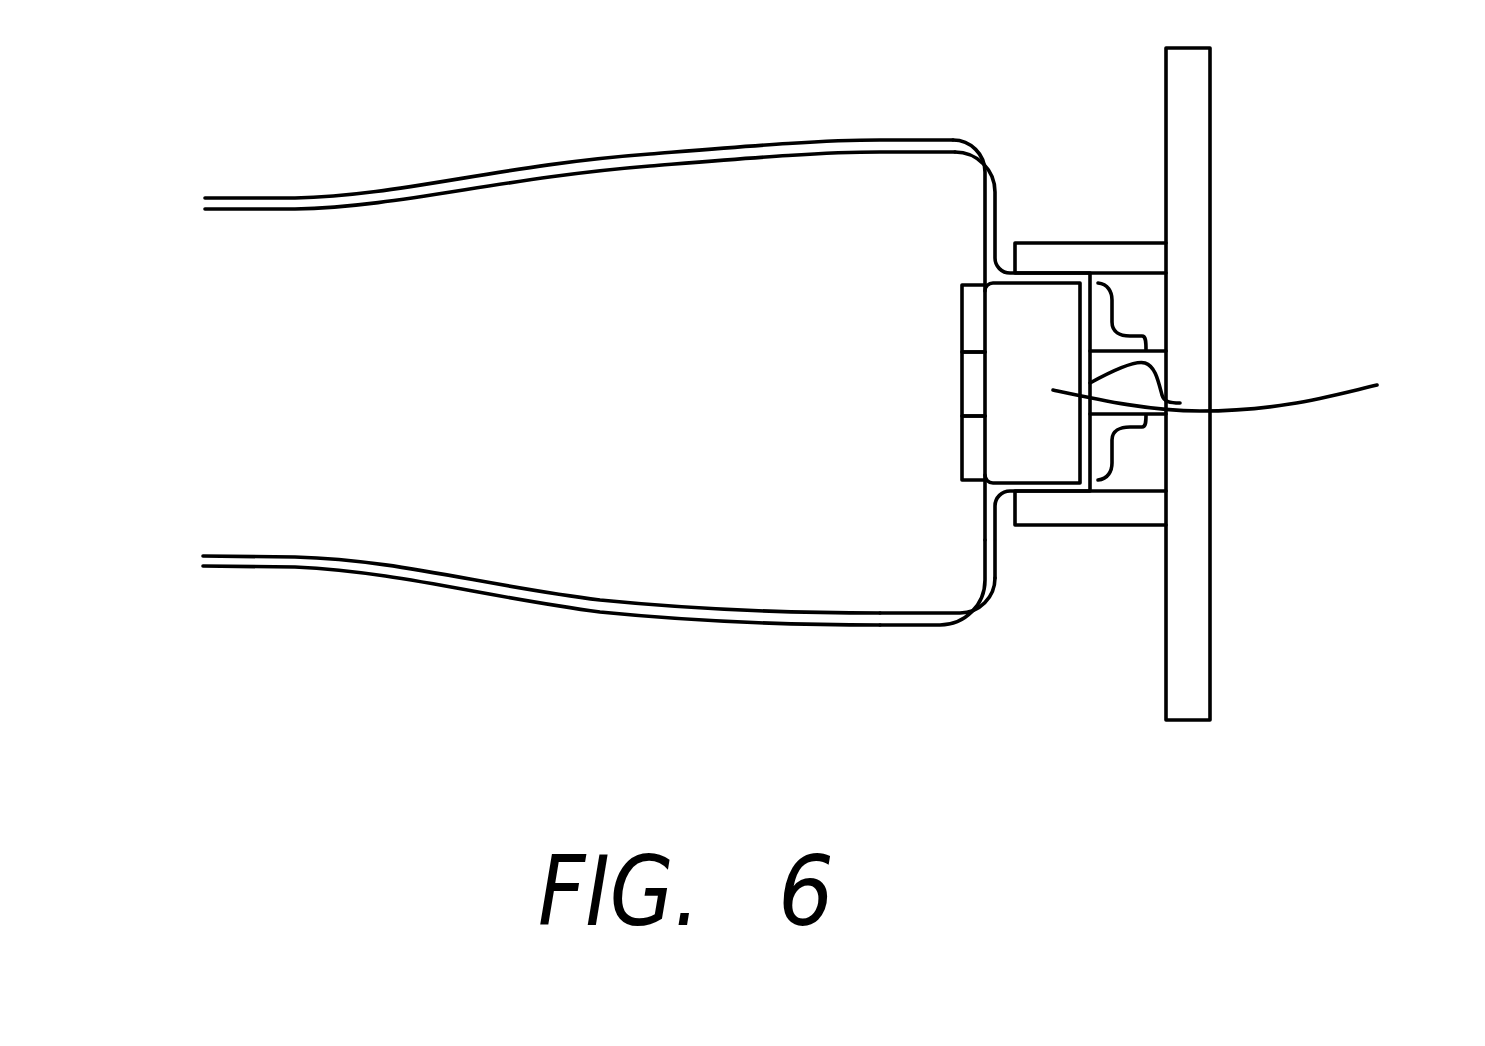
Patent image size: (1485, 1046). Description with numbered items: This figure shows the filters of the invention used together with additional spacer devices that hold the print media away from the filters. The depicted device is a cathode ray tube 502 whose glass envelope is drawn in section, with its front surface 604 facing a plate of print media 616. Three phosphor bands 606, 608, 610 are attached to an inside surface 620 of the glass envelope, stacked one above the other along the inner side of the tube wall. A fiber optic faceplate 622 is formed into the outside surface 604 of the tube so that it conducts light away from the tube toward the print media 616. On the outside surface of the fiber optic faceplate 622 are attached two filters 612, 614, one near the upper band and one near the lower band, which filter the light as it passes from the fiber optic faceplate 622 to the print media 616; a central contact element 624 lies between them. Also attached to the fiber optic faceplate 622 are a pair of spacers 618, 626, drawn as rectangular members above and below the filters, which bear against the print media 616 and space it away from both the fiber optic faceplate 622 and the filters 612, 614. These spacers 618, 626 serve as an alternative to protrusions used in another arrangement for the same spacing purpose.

The cathode ray tube neck 502 is at (714, 154).
The front surface 604 is at (997, 235).
The phosphor band 606 is at (968, 302).
The phosphor band 608 is at (972, 386).
The phosphor band 610 is at (970, 467).
The filter 612 is at (1103, 321).
The filter 614 is at (1103, 460).
The print media 616 is at (1185, 688).
The spacer 618 is at (1065, 244).
The inside surface 620 is at (985, 578).
The fiber optic faceplate 622 is at (1254, 381).
The center contact 624 is at (1180, 403).
The spacer 626 is at (1088, 507).